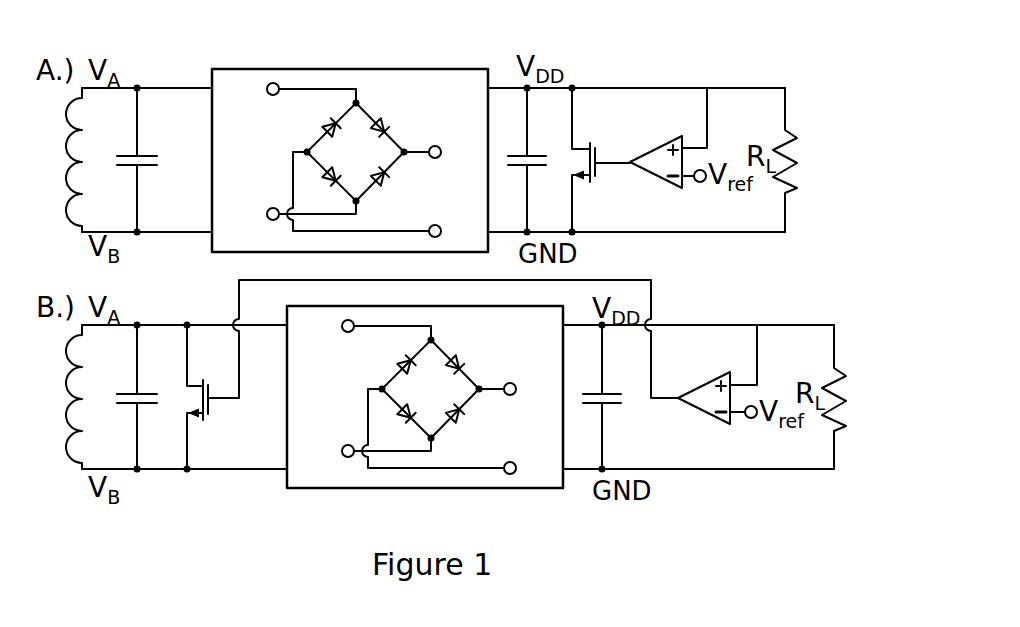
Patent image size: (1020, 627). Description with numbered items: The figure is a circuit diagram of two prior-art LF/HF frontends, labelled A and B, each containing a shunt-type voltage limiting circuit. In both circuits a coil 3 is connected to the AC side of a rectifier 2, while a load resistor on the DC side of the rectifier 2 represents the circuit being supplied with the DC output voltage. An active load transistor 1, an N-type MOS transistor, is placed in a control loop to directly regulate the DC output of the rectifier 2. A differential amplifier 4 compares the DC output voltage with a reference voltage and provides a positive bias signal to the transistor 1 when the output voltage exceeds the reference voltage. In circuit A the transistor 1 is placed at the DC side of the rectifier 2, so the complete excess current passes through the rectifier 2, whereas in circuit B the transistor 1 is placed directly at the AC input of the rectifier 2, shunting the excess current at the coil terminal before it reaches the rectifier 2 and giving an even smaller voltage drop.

The active load transistor 1 is at (598, 172).
The rectifier 2 is at (335, 69).
The coil 3 is at (64, 146).
The differential amplifier 4 is at (667, 140).